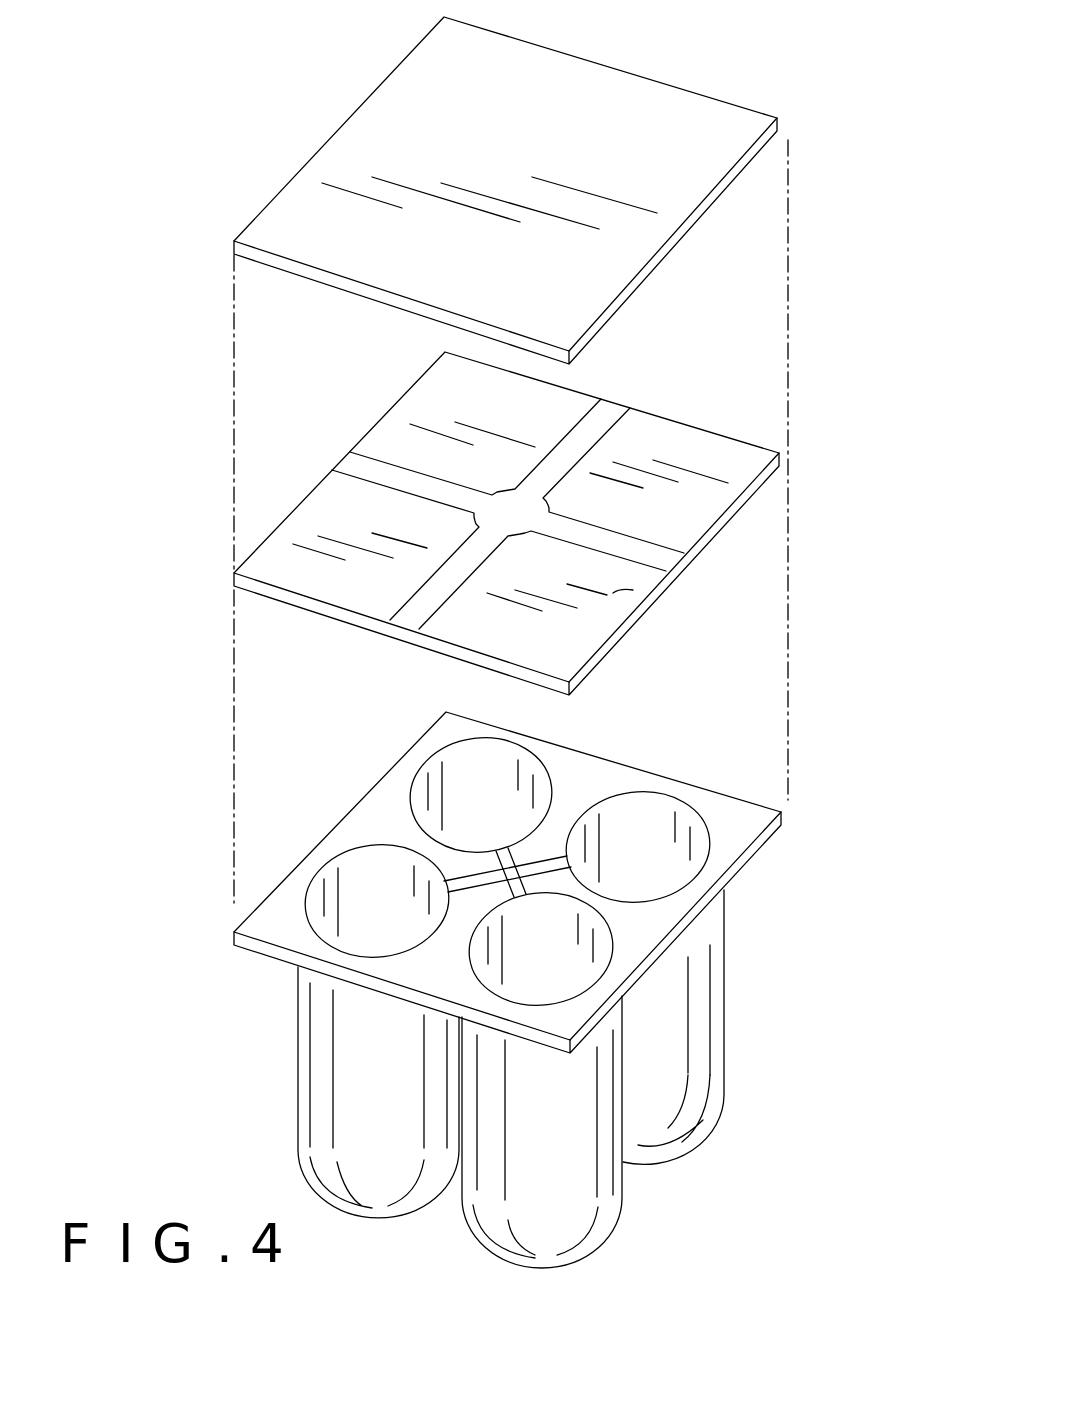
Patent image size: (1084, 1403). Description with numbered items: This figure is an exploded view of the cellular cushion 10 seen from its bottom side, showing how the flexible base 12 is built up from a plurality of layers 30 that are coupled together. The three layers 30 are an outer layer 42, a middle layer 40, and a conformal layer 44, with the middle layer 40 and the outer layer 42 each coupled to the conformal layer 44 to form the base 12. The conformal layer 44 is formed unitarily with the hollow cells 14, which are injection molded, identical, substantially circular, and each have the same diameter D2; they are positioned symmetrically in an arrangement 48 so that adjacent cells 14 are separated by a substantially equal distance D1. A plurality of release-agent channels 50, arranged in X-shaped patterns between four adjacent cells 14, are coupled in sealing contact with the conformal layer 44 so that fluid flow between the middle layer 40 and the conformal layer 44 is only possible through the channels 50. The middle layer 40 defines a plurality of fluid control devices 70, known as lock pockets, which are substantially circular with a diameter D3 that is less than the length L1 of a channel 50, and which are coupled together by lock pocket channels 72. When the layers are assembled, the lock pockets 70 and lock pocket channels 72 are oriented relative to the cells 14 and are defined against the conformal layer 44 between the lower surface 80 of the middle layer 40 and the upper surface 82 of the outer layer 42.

The cellular cushion 10 is at (151, 327).
The base 12 is at (207, 603).
The hollow cells 14 is at (467, 1218).
The layers 30 is at (818, 347).
The middle layer 40 is at (738, 501).
The outer layer 42 is at (658, 255).
The conformal layer 44 is at (549, 978).
The arrangement of air cells 48 is at (632, 1170).
The channels 50 is at (450, 873).
The fluid control devices 70 is at (550, 525).
The lock pocket channels 72 is at (392, 462).
The lower surface 80 is at (628, 585).
The upper surface 82 is at (384, 300).
The distance D1 is at (587, 721).
The diameter D2 is at (363, 850).
The diameter D3 is at (520, 536).
The length L1 is at (568, 861).